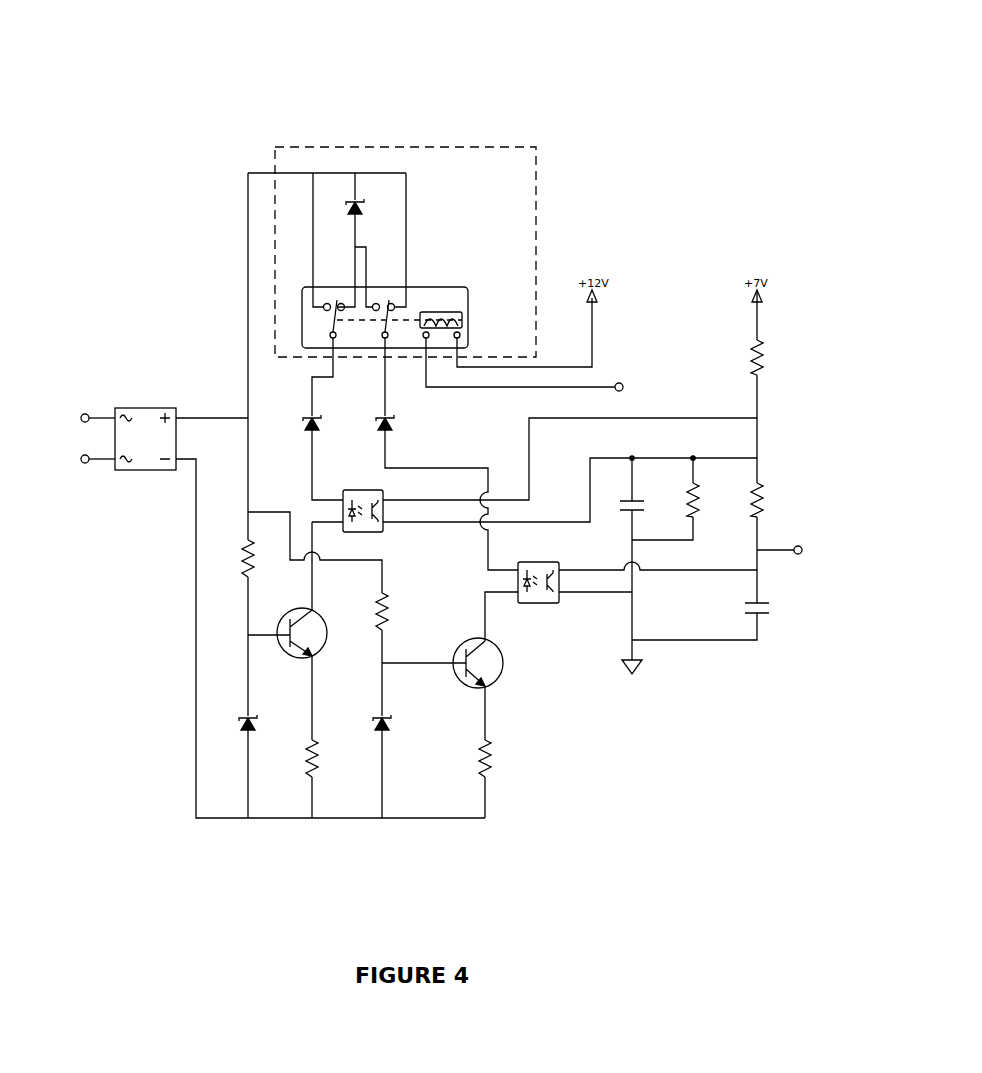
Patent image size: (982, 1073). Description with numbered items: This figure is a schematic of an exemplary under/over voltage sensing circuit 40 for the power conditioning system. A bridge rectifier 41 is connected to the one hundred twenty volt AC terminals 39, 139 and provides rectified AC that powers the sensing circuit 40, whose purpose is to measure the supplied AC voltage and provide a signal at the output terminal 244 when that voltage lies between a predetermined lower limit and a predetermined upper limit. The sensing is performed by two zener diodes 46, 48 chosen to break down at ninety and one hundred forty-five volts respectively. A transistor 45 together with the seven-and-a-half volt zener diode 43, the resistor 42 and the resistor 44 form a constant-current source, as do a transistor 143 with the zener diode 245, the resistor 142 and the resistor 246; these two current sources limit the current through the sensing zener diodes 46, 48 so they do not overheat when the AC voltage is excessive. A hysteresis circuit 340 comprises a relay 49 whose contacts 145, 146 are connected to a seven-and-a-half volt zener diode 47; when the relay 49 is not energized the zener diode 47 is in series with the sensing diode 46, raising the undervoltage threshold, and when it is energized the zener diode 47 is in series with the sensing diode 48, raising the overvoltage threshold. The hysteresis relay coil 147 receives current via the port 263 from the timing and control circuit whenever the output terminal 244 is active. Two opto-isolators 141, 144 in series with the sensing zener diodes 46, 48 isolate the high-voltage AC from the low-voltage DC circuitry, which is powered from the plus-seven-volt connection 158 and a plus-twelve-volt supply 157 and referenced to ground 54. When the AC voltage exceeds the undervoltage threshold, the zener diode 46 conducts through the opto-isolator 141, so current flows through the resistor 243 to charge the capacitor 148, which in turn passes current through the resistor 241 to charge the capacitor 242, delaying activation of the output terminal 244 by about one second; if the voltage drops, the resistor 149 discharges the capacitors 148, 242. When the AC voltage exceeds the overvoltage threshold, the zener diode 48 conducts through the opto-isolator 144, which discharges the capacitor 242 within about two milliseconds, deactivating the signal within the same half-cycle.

The under/over voltage sensing circuit 40 is at (771, 89).
The hysteresis circuit 340 is at (537, 192).
The AC terminal 39 is at (85, 414).
The AC terminal 139 is at (85, 463).
The bridge rectifier 41 is at (140, 408).
The resistor 42 is at (243, 580).
The zener diode 43 is at (255, 722).
The resistor 44 is at (314, 745).
The transistor 45 is at (320, 614).
The zener diode 46 is at (305, 435).
The zener diode 47 is at (362, 207).
The zener diode 48 is at (394, 424).
The relay 49 is at (397, 321).
The ground 54 is at (640, 672).
The opto-isolator 141 is at (380, 532).
The resistor 142 is at (387, 600).
The transistor 143 is at (500, 673).
The opto-isolator 144 is at (538, 603).
The relay contact 145 is at (335, 322).
The relay contact 146 is at (388, 322).
The hysteresis relay coil 147 is at (462, 320).
The capacitor 148 is at (627, 512).
The resistor 149 is at (696, 517).
The +12V supply 157 is at (598, 305).
The +7V connection 158 is at (762, 290).
The resistor 241 is at (762, 489).
The capacitor 242 is at (760, 620).
The resistor 243 is at (760, 340).
The output terminal 244 is at (811, 538).
The zener diode 245 is at (390, 724).
The resistor 246 is at (492, 770).
The port 263 is at (623, 384).